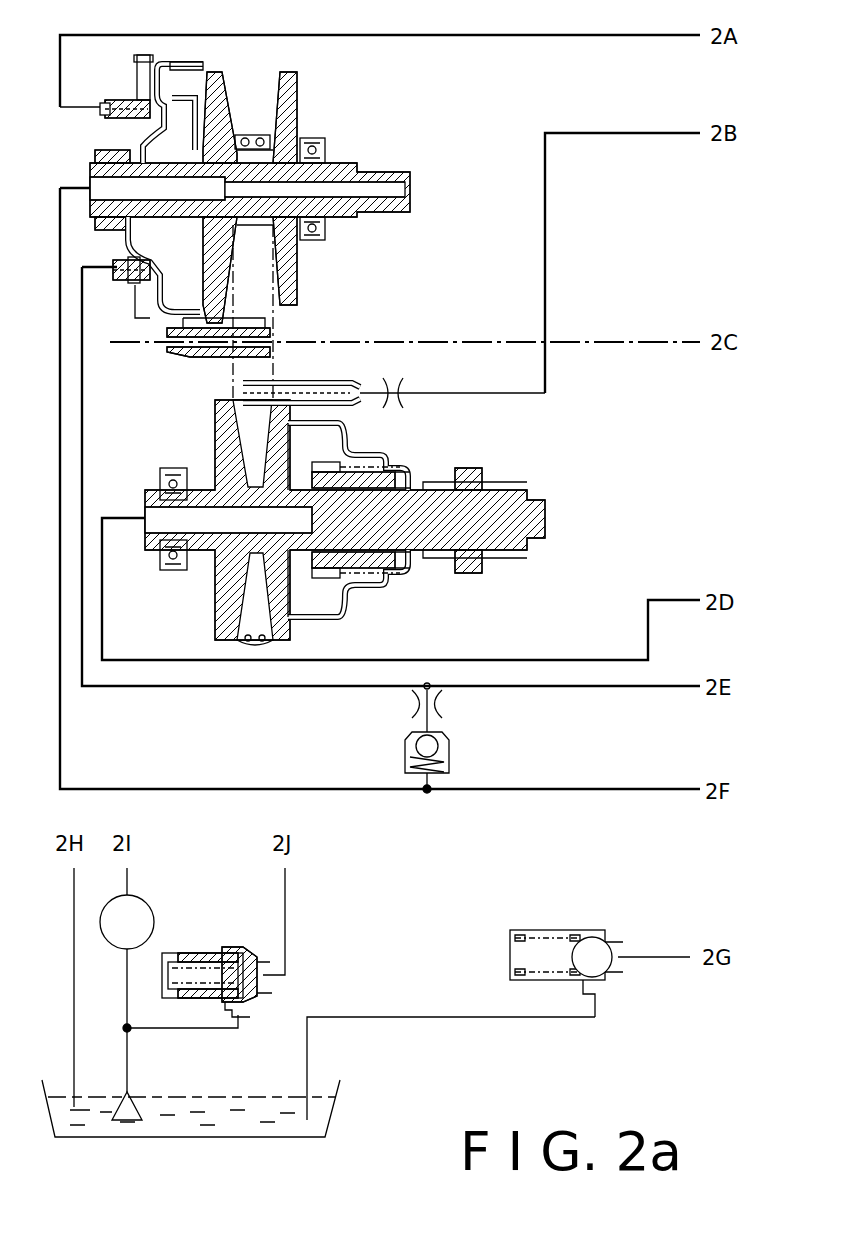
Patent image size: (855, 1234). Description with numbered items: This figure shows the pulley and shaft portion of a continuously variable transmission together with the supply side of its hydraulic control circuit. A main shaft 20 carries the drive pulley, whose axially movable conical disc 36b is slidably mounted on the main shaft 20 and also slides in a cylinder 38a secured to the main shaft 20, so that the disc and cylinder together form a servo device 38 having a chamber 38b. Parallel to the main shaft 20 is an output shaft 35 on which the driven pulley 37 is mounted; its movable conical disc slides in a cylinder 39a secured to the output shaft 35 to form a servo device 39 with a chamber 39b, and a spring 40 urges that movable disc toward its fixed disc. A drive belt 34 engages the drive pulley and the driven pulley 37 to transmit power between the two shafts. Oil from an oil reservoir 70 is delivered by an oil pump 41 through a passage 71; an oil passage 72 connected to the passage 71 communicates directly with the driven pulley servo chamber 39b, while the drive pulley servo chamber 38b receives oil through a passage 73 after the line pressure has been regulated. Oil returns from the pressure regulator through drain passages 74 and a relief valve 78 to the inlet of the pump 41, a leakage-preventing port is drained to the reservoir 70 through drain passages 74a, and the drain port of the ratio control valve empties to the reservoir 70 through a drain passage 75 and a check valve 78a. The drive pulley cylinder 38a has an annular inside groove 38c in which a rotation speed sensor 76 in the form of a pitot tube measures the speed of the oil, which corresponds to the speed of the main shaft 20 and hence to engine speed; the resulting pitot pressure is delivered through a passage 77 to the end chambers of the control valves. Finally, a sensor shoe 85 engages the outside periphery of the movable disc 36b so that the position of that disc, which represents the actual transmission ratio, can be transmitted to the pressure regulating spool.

The main shaft 20 is at (343, 163).
The drive belt 34 is at (262, 120).
The output shaft 35 is at (545, 524).
The movable conical disc 36b is at (220, 95).
The driven pulley 37 is at (278, 635).
The servo device 38 is at (207, 43).
The cylinder 38a is at (186, 62).
The chamber 38b is at (192, 140).
The annular inside groove 38c is at (138, 68).
The servo device 39 is at (408, 592).
The cylinder 39a is at (330, 607).
The chamber 39b is at (330, 465).
The spring 40 is at (383, 453).
The oil pump 41 is at (154, 914).
The oil reservoir 70 is at (132, 1145).
The passage 71 is at (129, 878).
The oil passage 72 is at (544, 659).
The passage 73 is at (575, 791).
The drain passages 74 is at (285, 920).
The drain passages 74a is at (74, 906).
The drain passage 75 is at (676, 942).
The rotation speed sensor 76 is at (128, 82).
The passage 77 is at (481, 34).
The relief valve 78 is at (208, 943).
The check valve 78a is at (610, 911).
The sensor shoe 85 is at (273, 320).